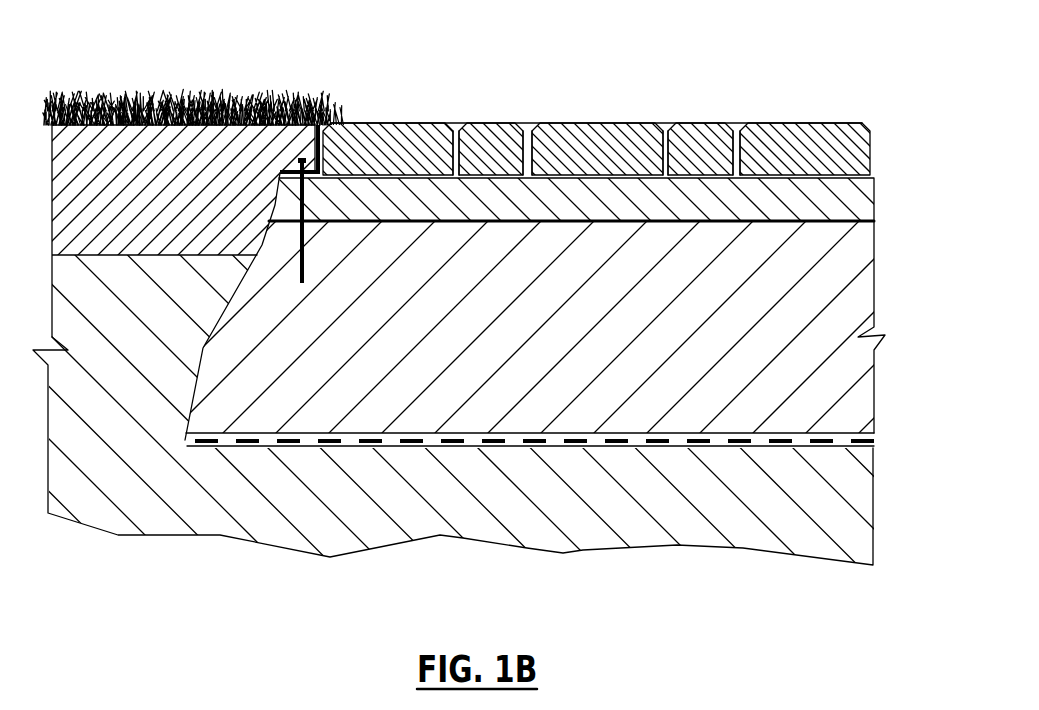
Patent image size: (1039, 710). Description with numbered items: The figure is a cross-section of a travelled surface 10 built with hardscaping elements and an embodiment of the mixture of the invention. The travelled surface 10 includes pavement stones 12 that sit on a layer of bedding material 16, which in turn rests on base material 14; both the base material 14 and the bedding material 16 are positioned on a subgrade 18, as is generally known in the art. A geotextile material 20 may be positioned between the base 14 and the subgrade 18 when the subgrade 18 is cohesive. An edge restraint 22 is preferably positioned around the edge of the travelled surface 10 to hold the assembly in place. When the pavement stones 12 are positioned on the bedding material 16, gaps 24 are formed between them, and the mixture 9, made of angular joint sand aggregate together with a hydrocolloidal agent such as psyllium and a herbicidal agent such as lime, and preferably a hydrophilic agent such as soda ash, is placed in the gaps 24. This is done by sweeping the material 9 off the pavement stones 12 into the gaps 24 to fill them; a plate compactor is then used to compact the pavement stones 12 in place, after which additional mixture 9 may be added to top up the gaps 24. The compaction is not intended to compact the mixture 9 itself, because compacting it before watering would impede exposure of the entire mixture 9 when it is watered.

The travelled surface 10 is at (551, 228).
The pavement stones 12 is at (384, 127).
The mixture 9 is at (456, 125).
The gaps 24 is at (455, 150).
The bedding material 16 is at (865, 202).
The base material 14 is at (865, 385).
The geotextile material 20 is at (874, 441).
The subgrade 18 is at (740, 543).
The edge restraint 22 is at (322, 122).